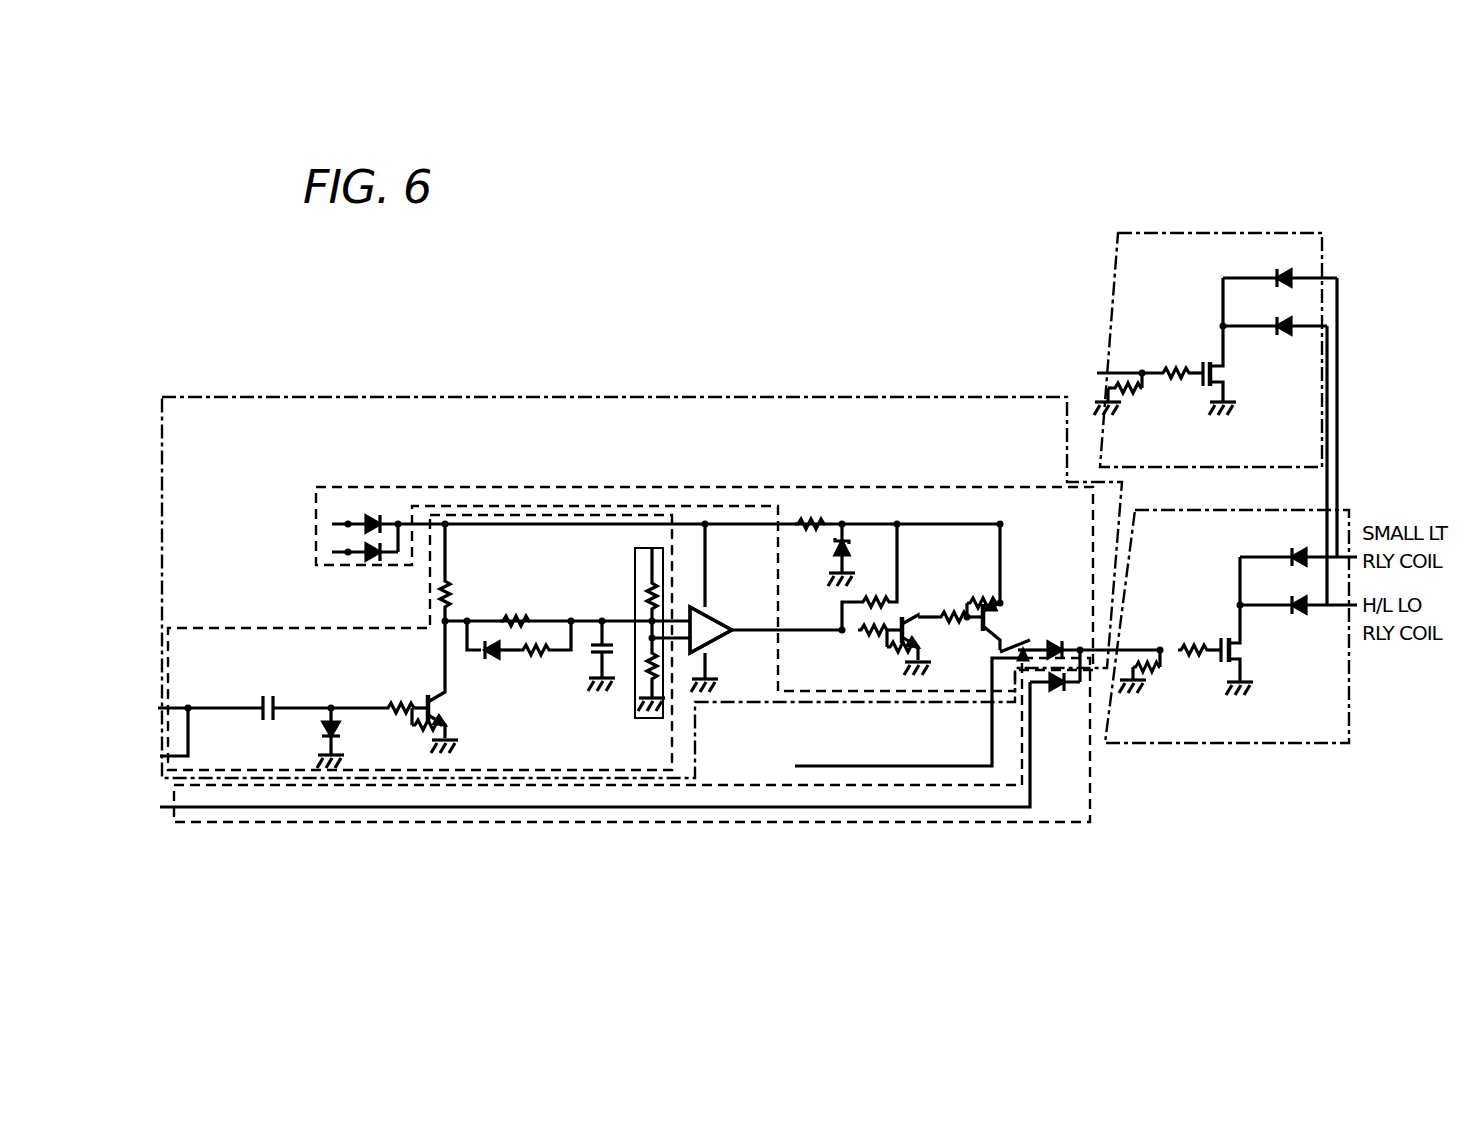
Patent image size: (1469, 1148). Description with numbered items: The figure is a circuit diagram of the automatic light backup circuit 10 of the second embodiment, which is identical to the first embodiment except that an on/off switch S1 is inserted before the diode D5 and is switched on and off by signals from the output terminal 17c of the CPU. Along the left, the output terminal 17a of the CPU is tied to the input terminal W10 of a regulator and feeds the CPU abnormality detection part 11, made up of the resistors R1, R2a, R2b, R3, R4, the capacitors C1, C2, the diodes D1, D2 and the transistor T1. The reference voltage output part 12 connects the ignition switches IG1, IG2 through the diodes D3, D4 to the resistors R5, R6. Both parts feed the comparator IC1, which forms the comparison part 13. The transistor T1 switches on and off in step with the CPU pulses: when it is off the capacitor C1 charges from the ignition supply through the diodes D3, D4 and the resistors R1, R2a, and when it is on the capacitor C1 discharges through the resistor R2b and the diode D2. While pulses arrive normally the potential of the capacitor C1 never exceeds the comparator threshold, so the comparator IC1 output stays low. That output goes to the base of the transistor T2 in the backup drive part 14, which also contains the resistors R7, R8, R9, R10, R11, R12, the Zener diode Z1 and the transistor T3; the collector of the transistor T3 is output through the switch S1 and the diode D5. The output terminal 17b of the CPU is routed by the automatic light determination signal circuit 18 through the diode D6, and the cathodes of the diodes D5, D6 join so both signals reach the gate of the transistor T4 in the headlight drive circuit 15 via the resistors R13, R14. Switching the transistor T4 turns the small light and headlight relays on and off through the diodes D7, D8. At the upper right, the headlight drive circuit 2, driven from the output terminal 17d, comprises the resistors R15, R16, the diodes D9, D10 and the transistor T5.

The headlight drive circuit 2 is at (1183, 233).
The automatic light backup circuit 10 is at (728, 395).
The CPU abnormality detection part 11 is at (228, 627).
The reference voltage output part 12 is at (640, 548).
The comparison part 13 is at (716, 604).
The backup drive part 14 is at (974, 486).
The headlight drive circuit 15 is at (1218, 744).
The automatic light determination signal circuit 18 is at (972, 823).
The output terminal of the CPU 17a is at (151, 738).
The output terminal of the CPU 17b is at (572, 751).
The output terminal of the CPU 17c is at (889, 714).
The output terminal of the CPU 17d is at (1106, 373).
The input terminal of a regulator W10 is at (184, 708).
The ignition switch IG1 is at (346, 514).
The ignition switch IG2 is at (344, 540).
The diode D1 is at (313, 737).
The diode D2 is at (495, 660).
The diode D3 is at (380, 520).
The diode D4 is at (383, 557).
The diode D5 is at (1058, 642).
The diode D6 is at (1055, 692).
The diode D7 is at (1296, 550).
The diode D8 is at (1297, 612).
The diode D9 is at (1280, 272).
The diode D10 is at (1282, 332).
The resistor R1 is at (450, 592).
The resistor R2a is at (517, 616).
The resistor R2b is at (519, 652).
The resistor R3 is at (396, 705).
The resistor R4 is at (422, 730).
The resistor R5 is at (648, 590).
The resistor R6 is at (644, 678).
The resistor R7 is at (810, 520).
The resistor R8 is at (876, 600).
The resistor R9 is at (862, 640).
The resistor R10 is at (895, 668).
The resistor R11 is at (945, 612).
The resistor R12 is at (985, 600).
The resistor R13 is at (1148, 676).
The resistor R14 is at (1190, 645).
The resistor R15 is at (1135, 402).
The resistor R16 is at (1174, 368).
The capacitor C1 is at (596, 652).
The capacitor C2 is at (266, 695).
The transistor T1 is at (438, 706).
The transistor T2 is at (920, 640).
The transistor T3 is at (1000, 620).
The transistor T4 is at (1245, 655).
The transistor T5 is at (1230, 378).
The Zener diode Z1 is at (848, 548).
The on/off switch S1 is at (1000, 645).
The comparator IC1 is at (725, 626).